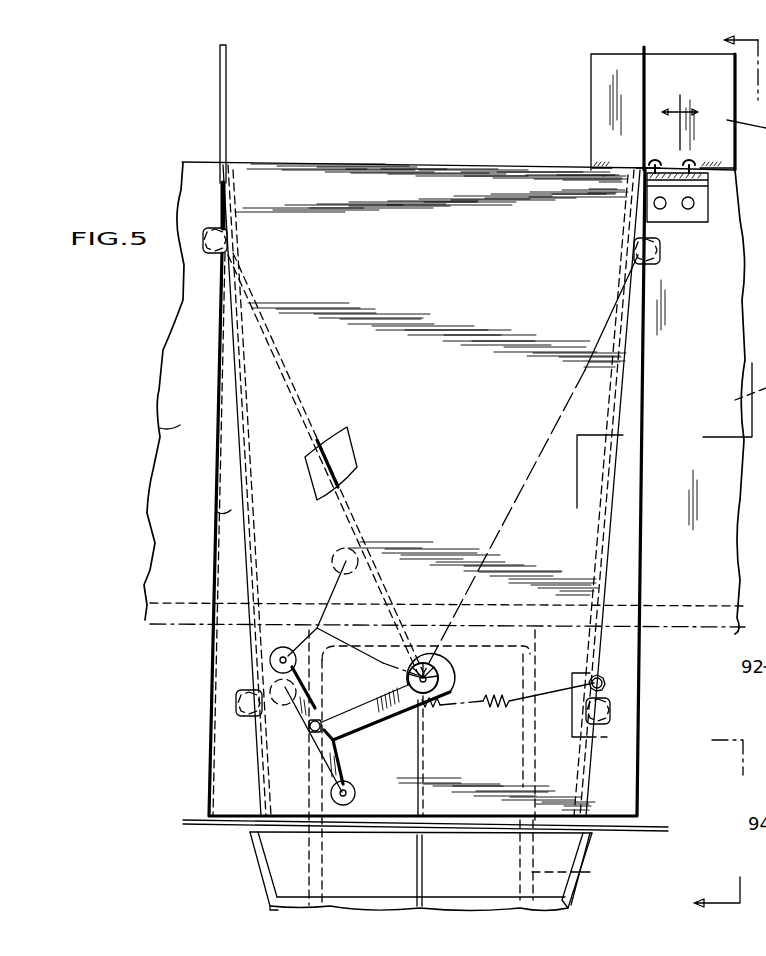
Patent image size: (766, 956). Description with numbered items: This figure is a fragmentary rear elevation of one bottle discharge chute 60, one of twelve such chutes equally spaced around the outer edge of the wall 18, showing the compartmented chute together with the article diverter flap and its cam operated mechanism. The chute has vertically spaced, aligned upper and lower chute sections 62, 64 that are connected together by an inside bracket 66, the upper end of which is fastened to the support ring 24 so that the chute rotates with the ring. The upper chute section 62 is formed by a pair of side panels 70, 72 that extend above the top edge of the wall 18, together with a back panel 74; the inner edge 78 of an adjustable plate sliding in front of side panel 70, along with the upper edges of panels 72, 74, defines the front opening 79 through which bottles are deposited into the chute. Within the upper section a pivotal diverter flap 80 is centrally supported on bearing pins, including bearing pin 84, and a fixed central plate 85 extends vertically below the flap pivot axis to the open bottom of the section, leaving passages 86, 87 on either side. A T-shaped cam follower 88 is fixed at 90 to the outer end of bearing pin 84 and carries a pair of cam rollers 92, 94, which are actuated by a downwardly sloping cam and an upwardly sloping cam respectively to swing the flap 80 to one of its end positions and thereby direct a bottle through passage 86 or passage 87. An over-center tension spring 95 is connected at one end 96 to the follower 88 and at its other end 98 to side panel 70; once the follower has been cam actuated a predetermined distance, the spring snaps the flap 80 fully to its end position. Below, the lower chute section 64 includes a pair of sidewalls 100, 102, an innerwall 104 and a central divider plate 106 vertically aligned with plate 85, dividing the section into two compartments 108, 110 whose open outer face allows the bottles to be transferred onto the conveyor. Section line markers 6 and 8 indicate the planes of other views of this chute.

The section line 6- 6 is at (730, 471).
The section line 8- 8 is at (739, 740).
The wall 18 is at (162, 427).
The support ring 24 is at (174, 630).
The bottle discharge chute 60 is at (160, 337).
The upper chute section 62 is at (222, 512).
The lower chute section 64 is at (575, 892).
The inside bracket 66 is at (573, 873).
The side panel 70 is at (647, 78).
The side panel 72 is at (230, 88).
The back panel 74 is at (436, 273).
The inner edge 78 is at (590, 116).
The front opening 79 is at (382, 163).
The diverter flap 80 is at (331, 461).
The bearing pin 84 is at (418, 665).
The fixed central plate 85 is at (424, 773).
The passage 86 is at (373, 764).
The passage 87 is at (519, 770).
The T-shaped cam follower 88 is at (338, 763).
The fixing point of cam follower 90 is at (440, 670).
The cam roller 92 is at (270, 660).
The cam roller 94 is at (356, 791).
The over-center tension spring 95 is at (508, 708).
The spring end 96 is at (320, 720).
The spring end 98 is at (607, 673).
The sidewall 100 is at (593, 834).
The sidewall 102 is at (260, 867).
The innerwall 104 is at (265, 840).
The central divider plate 106 is at (424, 868).
The compartment 108 is at (364, 867).
The compartment 110 is at (508, 867).